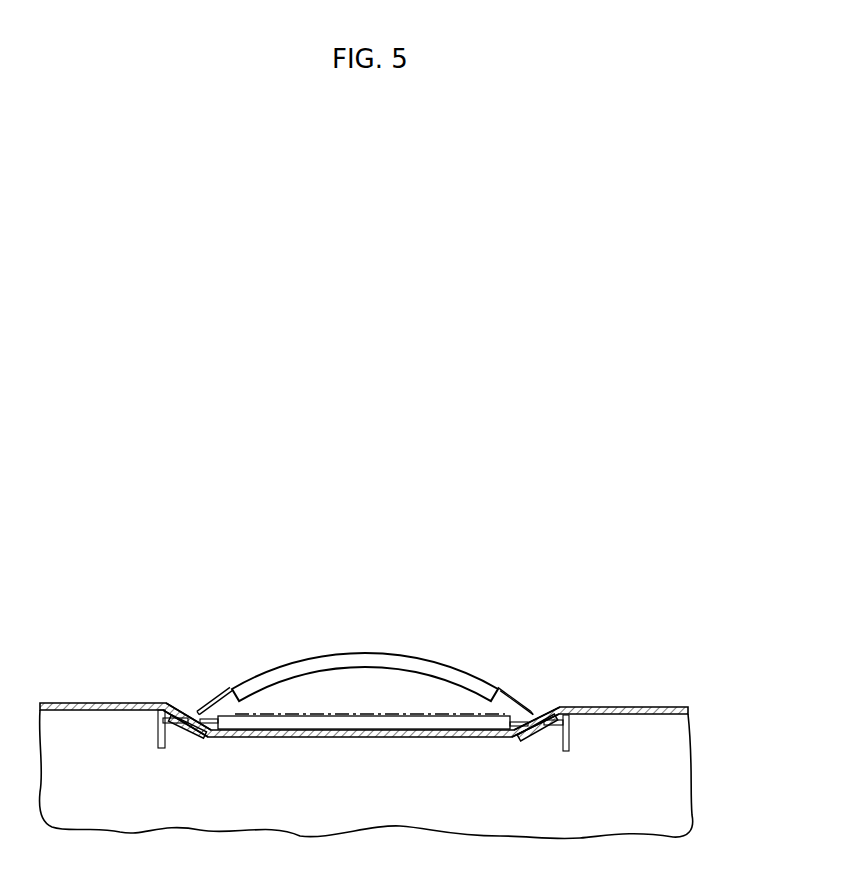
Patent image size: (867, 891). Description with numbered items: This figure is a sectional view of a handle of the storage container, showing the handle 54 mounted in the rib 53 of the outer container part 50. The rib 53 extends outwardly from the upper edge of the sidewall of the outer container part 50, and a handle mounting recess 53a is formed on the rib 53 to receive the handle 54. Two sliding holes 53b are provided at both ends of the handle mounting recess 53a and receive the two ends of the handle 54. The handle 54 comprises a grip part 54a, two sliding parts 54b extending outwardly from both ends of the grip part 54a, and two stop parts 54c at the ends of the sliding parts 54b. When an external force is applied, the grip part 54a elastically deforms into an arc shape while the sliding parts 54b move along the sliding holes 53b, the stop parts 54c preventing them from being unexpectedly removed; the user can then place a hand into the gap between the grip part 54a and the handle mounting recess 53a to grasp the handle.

The outer container part 50 is at (697, 752).
The rib 53 is at (57, 703).
The handle mounting recess 53a is at (343, 728).
The sliding hole 53b is at (175, 712).
The handle 54 is at (420, 655).
The grip part 54a is at (342, 660).
The sliding part 54b is at (205, 693).
The stop part 54c is at (187, 728).